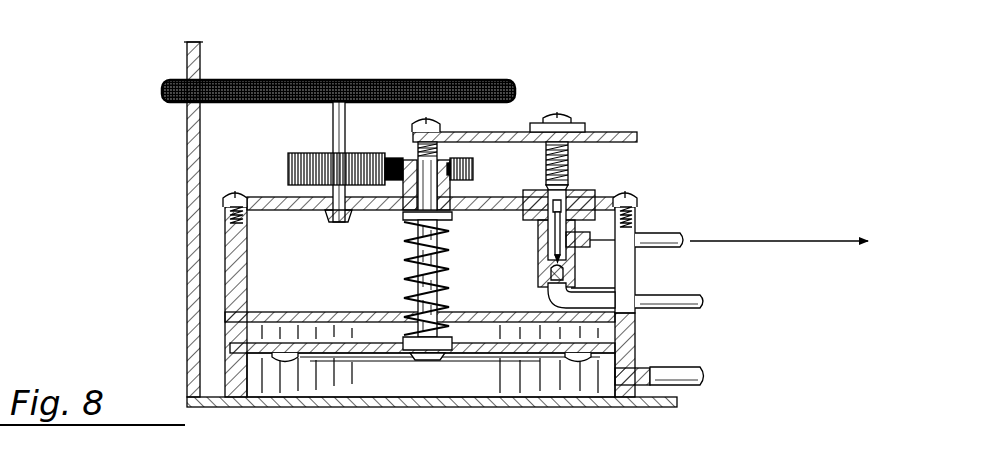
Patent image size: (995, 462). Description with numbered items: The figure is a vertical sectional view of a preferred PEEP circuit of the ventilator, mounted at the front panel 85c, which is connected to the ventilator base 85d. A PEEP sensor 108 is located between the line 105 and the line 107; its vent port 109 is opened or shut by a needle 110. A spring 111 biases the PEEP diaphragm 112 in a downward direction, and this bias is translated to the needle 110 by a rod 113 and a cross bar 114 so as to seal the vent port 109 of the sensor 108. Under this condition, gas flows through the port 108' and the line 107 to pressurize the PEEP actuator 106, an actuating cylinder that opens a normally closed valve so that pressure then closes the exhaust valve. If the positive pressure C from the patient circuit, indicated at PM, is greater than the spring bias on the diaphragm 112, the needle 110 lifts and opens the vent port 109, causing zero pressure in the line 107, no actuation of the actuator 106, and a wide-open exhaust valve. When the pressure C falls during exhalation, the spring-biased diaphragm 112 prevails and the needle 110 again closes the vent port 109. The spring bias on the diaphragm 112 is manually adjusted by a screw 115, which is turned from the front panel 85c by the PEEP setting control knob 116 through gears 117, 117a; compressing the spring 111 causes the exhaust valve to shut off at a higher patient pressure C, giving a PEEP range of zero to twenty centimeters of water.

The front panel 85c is at (186, 257).
The ventilator base 85d is at (270, 407).
The pressure medium PM is at (376, 410).
The PEEP diaphragm 112 is at (478, 353).
The control knob 116 is at (377, 80).
The gear 117 is at (302, 153).
The gear 117a is at (473, 163).
The cross bar 114 is at (617, 132).
The screw 115 is at (405, 195).
The rod 113 is at (412, 232).
The spring 111 is at (410, 258).
The needle 110 is at (572, 122).
The vent port 109 is at (575, 183).
The PEEP sensor 108 is at (599, 237).
The port 108' is at (546, 237).
The line 107 is at (650, 234).
The PEEP actuator 106 is at (779, 232).
The line 105 is at (648, 296).
The positive pressure C is at (710, 376).